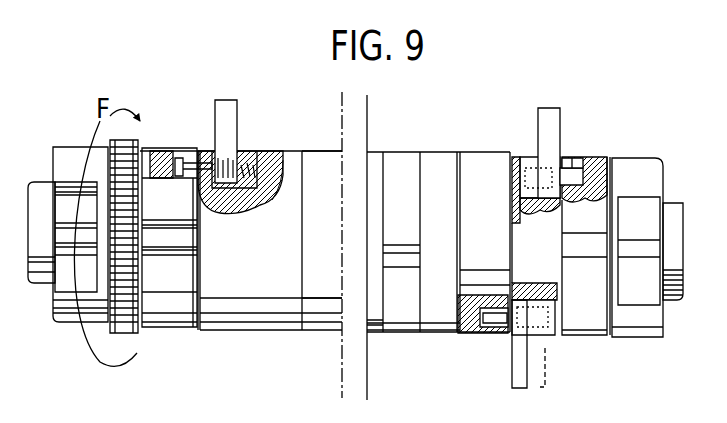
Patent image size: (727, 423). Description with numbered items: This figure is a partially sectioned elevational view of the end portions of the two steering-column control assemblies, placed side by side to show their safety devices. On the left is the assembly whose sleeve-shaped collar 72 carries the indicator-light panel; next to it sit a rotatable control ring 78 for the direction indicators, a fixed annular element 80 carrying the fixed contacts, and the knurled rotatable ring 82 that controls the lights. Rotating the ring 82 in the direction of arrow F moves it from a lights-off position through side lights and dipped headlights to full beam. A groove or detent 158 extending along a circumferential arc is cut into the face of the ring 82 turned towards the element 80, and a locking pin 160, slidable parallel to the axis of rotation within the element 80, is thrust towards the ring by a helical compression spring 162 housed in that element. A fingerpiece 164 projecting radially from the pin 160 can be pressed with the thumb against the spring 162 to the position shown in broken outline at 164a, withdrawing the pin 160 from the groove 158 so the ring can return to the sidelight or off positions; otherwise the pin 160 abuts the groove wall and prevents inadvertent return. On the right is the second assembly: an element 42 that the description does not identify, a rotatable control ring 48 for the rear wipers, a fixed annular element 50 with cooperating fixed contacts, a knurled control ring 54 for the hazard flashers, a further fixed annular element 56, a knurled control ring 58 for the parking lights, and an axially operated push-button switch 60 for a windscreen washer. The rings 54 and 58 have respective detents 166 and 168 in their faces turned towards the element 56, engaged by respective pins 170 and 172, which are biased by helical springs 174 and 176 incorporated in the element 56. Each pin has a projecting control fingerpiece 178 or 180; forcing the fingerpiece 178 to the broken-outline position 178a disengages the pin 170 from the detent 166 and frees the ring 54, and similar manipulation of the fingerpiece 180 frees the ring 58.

The housing end wall 42 is at (372, 333).
The rotatable control ring 48 is at (400, 163).
The fixed annular element 50 is at (428, 333).
The rotatable control ring 54 is at (468, 165).
The further fixed annular element 56 is at (507, 236).
The further rotatable control ring 58 is at (590, 318).
The push-button switch 60 is at (680, 300).
The sleeve-shaped collar 72 is at (325, 313).
The rotatable control ring 78 is at (287, 313).
The fixed annular element 80 is at (228, 310).
The rotatable ring 82 is at (165, 305).
The groove or detent 158 is at (170, 150).
The locking pin 160 is at (190, 163).
The helical compression spring 162 is at (243, 150).
The fingerpiece 164 is at (226, 130).
The withdrawn position of fingerpiece 164a is at (283, 190).
The detent 166 is at (490, 332).
The detent 168 is at (578, 162).
The locking pin 170 is at (495, 318).
The pin 172 is at (608, 186).
The helical spring 174 is at (530, 388).
The helical spring 176 is at (528, 160).
The control fingerpiece 178 is at (513, 385).
The disengaged position of fingerpiece 178a is at (548, 350).
The control fingerpiece 180 is at (552, 120).